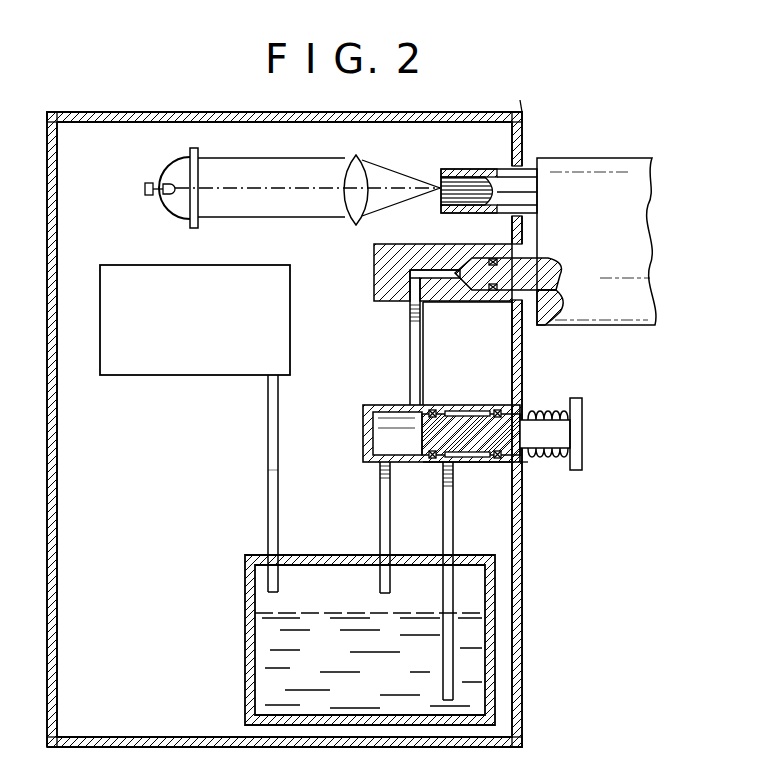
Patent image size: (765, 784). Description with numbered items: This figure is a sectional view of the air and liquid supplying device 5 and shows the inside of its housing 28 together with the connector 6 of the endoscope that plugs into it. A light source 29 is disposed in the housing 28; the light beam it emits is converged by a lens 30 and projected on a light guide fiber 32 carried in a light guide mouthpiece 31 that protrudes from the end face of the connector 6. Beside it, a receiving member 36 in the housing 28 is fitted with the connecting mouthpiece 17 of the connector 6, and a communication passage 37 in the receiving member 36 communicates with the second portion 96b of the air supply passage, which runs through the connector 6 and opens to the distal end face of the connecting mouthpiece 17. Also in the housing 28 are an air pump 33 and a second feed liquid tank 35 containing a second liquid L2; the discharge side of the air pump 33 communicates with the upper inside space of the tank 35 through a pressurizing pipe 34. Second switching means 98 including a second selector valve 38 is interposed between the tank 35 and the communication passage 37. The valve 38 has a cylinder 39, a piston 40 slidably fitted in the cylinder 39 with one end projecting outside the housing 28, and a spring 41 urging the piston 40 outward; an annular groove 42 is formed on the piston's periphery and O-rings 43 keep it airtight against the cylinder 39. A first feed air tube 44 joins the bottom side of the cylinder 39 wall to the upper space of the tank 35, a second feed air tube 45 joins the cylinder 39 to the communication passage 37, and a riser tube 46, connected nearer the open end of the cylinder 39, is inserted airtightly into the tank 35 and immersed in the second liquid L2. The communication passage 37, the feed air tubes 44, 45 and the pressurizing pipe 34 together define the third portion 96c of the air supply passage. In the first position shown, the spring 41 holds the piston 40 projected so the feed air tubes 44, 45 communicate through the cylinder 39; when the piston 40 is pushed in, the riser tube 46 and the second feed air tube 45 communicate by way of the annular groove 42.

The housing 28 is at (147, 112).
The apparatus 5 is at (586, 128).
The light source 29 is at (163, 170).
The lens 30 is at (352, 165).
The light guide mouthpiece 31 is at (498, 180).
The light guide fiber 32 is at (452, 175).
The connector 6 is at (633, 190).
The receiving member 36 is at (374, 272).
The communication passage 37 is at (414, 272).
The connecting mouthpiece 17 is at (518, 260).
The second portion of air supply passage 96b is at (560, 272).
The second feed air tube 45 is at (409, 352).
The cylinder 39 is at (363, 440).
The annular groove 42 is at (470, 416).
The O-rings 43 is at (432, 410).
The spring 41 is at (552, 408).
The piston 40 is at (582, 440).
The second switching means 98 is at (536, 468).
The second selector valve 38 is at (476, 470).
The air pump 33 is at (130, 372).
The pressurizing pipe 34 is at (268, 436).
The third portion of air supply passage 96c is at (267, 470).
The first feed air tube 44 is at (380, 506).
The riser tube 46 is at (443, 534).
The second feed liquid tank 35 is at (245, 582).
The second liquid L2 is at (318, 613).